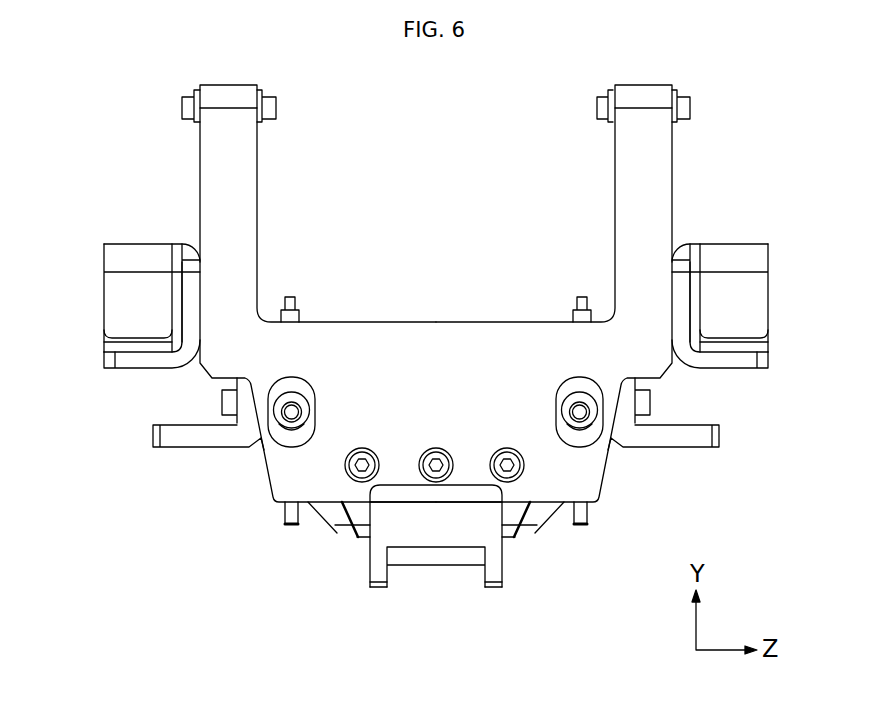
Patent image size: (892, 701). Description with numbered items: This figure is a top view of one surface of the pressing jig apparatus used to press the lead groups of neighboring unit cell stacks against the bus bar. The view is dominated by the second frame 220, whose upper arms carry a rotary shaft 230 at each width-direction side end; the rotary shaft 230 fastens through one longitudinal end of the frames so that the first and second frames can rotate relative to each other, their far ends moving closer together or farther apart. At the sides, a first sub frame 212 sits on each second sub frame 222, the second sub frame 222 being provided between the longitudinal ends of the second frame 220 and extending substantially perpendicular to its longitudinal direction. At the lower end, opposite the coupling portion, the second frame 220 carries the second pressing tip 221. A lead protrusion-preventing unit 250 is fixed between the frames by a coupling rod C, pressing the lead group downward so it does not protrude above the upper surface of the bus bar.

The second frame 220 is at (658, 165).
The rotary shaft 230 is at (690, 108).
The first sub frame 212 is at (117, 302).
The second sub frame 222 is at (132, 360).
The lead protrusion-preventing unit 250 is at (350, 532).
The second pressing tip 221 is at (380, 590).
The coupling rod C is at (579, 412).